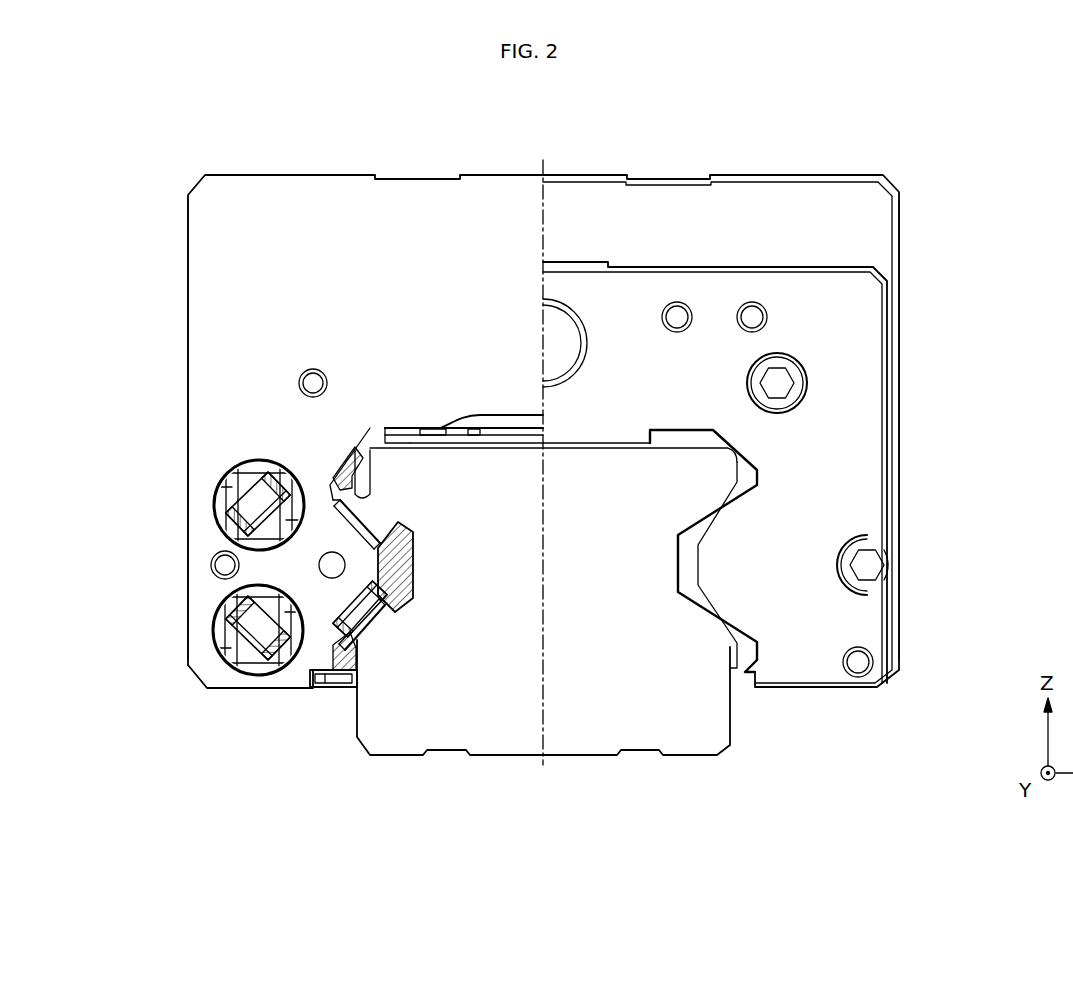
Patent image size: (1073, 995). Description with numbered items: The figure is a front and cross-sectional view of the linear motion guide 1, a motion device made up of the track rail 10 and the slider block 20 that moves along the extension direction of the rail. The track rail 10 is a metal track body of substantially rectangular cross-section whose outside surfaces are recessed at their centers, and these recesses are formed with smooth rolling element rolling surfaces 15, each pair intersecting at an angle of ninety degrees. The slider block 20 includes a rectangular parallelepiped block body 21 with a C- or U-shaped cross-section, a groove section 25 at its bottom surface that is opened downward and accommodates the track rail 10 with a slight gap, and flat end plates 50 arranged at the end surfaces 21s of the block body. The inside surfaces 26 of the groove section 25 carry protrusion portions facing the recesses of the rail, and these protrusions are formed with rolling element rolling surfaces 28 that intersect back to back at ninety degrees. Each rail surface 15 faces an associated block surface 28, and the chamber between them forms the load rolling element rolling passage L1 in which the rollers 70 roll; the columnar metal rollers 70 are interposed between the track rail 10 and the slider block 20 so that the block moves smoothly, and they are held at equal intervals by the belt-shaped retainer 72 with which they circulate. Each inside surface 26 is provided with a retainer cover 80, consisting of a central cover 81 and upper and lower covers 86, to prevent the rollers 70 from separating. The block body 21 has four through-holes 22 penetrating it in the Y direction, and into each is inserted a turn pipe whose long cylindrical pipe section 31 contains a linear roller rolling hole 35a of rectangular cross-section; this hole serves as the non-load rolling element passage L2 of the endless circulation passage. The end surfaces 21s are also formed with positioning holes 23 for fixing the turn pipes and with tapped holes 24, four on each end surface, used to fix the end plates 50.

The linear motion guide 1 is at (952, 142).
The track rail 10 is at (647, 740).
The rolling element rolling surface 15 is at (375, 503).
The slider block 20 is at (777, 205).
The block body 21 is at (875, 228).
The end surface 21s is at (198, 314).
The through-hole 22 is at (236, 470).
The positioning hole 23 is at (319, 565).
The tapped hole 24 is at (299, 383).
The groove section 25 is at (342, 703).
The inside surface 26 is at (432, 437).
The rolling element rolling surface 28 is at (337, 488).
The pipe section 31 is at (225, 487).
The roller rolling hole 35a is at (270, 475).
The end plate 50 is at (862, 375).
The roller 70 is at (236, 505).
The retainer 72 is at (228, 535).
The retainer cover 80 is at (462, 838).
The central cover 81 is at (408, 598).
The upper and lower cover 86 is at (735, 500).
The load rolling element rolling passage L1 is at (382, 521).
The non-load rolling element passage L2 is at (138, 569).